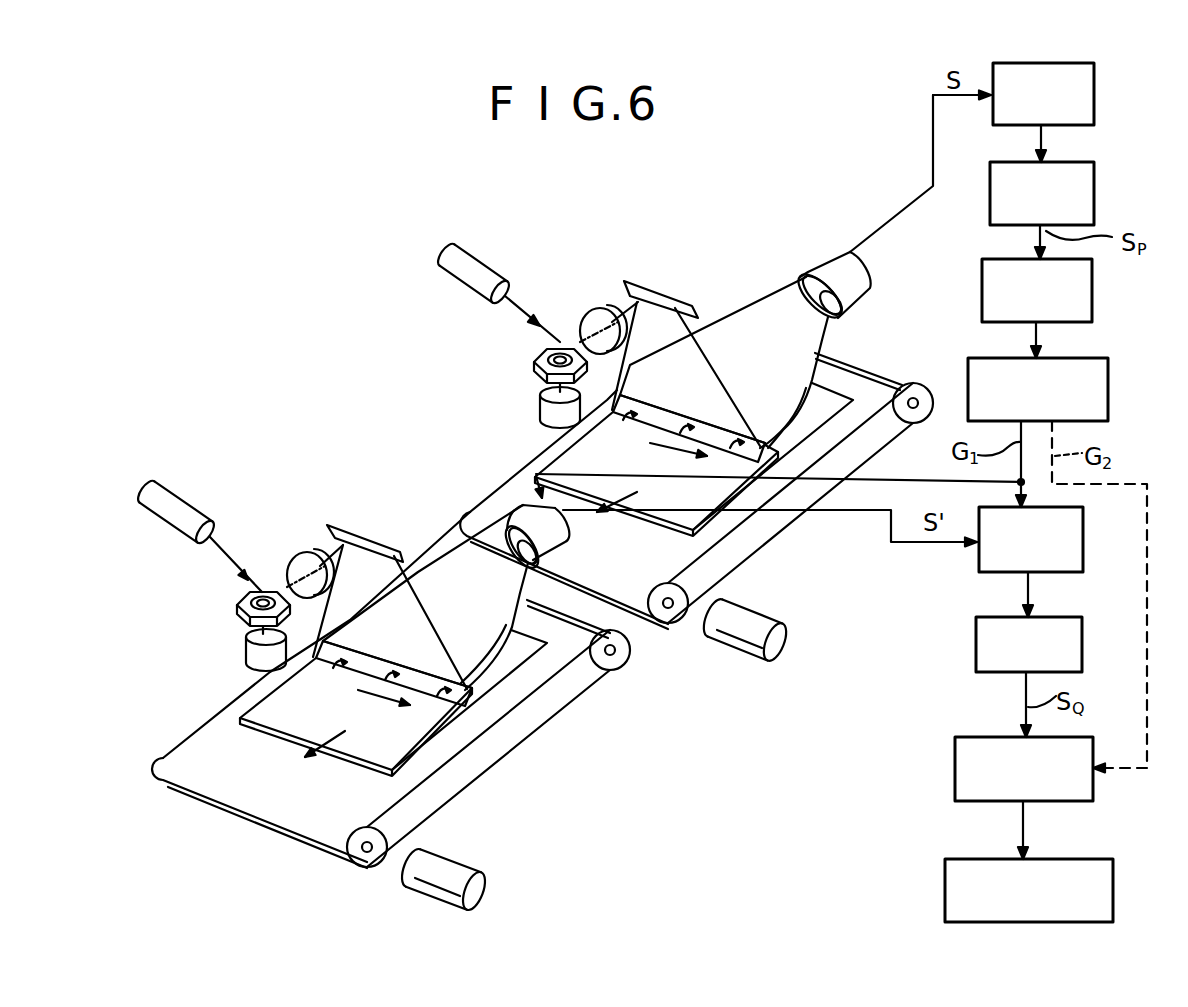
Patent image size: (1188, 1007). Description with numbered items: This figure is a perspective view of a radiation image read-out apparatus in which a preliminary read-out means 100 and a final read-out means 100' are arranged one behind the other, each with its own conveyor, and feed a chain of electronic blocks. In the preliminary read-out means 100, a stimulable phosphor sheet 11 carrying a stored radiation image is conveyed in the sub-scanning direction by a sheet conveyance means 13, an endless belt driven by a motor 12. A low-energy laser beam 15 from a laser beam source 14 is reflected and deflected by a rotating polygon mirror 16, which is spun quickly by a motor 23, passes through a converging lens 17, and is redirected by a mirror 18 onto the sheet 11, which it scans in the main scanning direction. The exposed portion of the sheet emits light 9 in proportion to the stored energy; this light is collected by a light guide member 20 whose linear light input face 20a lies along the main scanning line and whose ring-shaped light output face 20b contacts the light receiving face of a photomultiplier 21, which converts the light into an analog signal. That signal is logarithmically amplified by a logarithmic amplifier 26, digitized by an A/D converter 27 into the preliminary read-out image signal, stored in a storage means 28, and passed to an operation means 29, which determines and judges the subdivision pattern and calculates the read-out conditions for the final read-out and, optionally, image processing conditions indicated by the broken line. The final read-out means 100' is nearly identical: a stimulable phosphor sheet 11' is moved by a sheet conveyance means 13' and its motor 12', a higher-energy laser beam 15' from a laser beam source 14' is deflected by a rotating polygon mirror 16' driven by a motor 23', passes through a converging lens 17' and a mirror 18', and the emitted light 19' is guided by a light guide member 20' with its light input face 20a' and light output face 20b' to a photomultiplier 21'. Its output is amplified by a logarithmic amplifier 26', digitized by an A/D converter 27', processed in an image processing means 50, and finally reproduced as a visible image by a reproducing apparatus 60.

The scanning line 9 is at (637, 416).
The stimulable phosphor sheet 11 is at (686, 487).
The motor 12 is at (760, 625).
The sheet conveyance means 13 is at (696, 491).
The laser beam source 14 is at (480, 270).
The laser beam 15 is at (532, 308).
The rotating polygon mirror 16 is at (531, 360).
The converging lens 17 is at (603, 307).
The mirror 18 is at (686, 350).
The light guide member 20 is at (724, 354).
The light input face 20a is at (754, 453).
The light output face 20b is at (860, 319).
The photomultiplier 21 is at (831, 266).
The motor 23 is at (530, 405).
The logarithmic amplifier 26 is at (1075, 94).
The A/D converter 27 is at (1070, 193).
The storage means 28 is at (1093, 301).
The operation means 29 is at (1108, 392).
The image processing means 50 is at (1093, 748).
The reproducing apparatus 60 is at (1124, 866).
The preliminary read-out means 100 is at (617, 227).
The stimulable phosphor sheet 11' is at (396, 729).
The motor 12' is at (466, 870).
The sheet conveyance means 13' is at (391, 690).
The laser beam source 14' is at (190, 510).
The laser beam 15' is at (245, 550).
The rotating polygon mirror 16' is at (231, 598).
The converging lens 17' is at (315, 543).
The mirror 18' is at (390, 595).
The emitted light 19' is at (379, 682).
The light guide member 20' is at (425, 589).
The light input face 20a' is at (461, 702).
The light output face 20b' is at (583, 552).
The photomultiplier 21' is at (523, 512).
The motor 23' is at (230, 648).
The logarithmic amplifier 26' is at (1056, 539).
The A/D converter 27' is at (1054, 637).
The final read-out means 100' is at (299, 459).